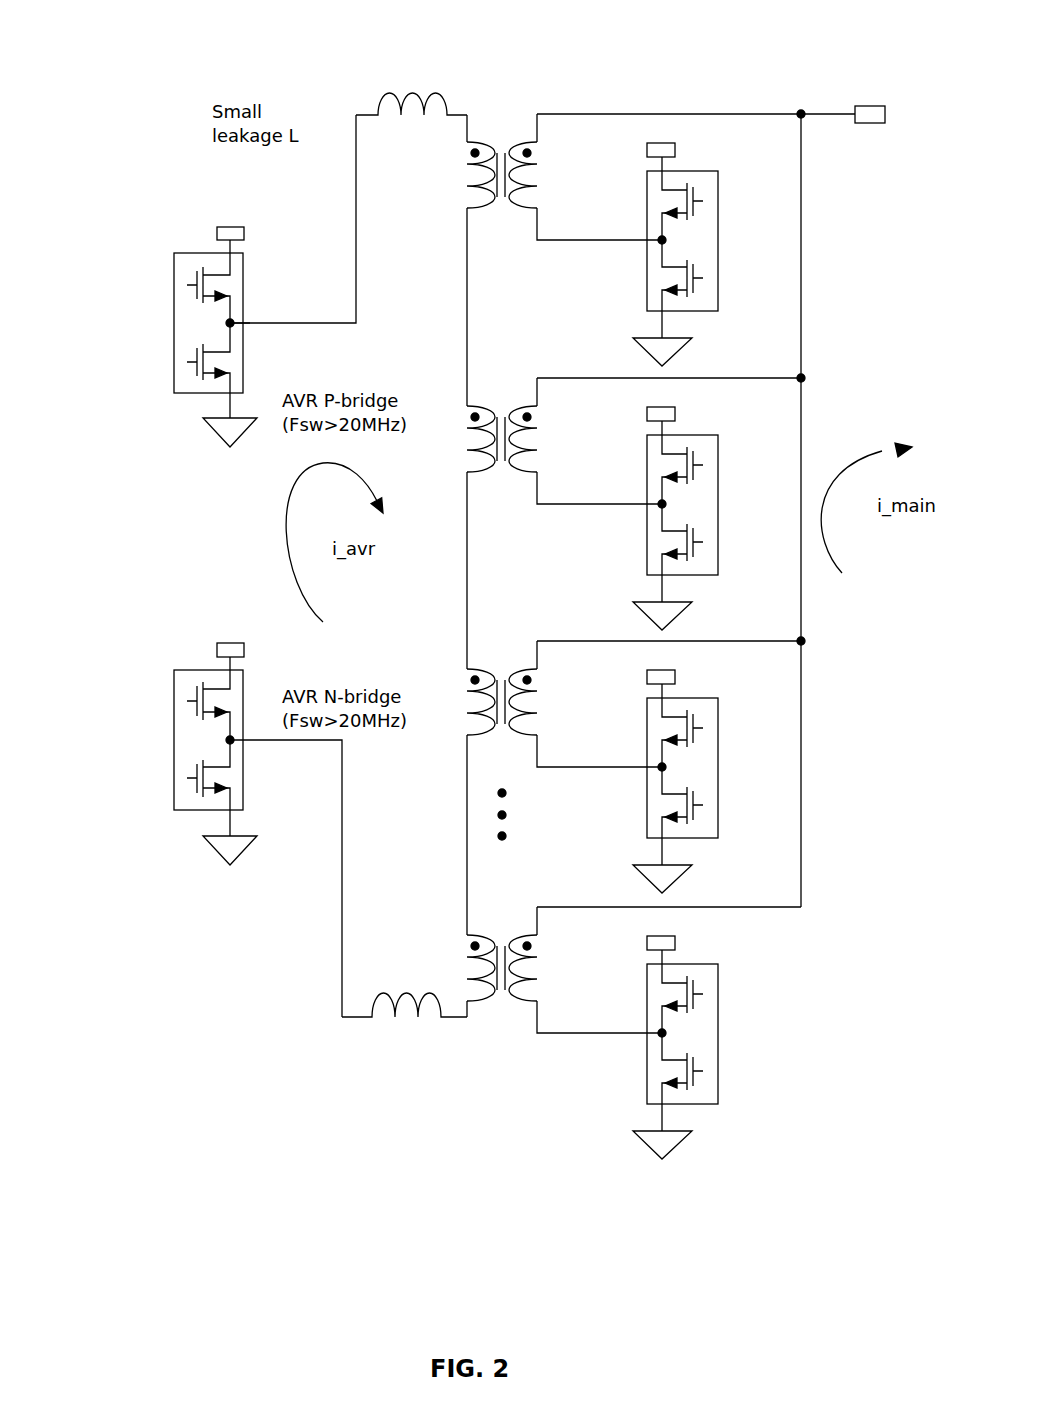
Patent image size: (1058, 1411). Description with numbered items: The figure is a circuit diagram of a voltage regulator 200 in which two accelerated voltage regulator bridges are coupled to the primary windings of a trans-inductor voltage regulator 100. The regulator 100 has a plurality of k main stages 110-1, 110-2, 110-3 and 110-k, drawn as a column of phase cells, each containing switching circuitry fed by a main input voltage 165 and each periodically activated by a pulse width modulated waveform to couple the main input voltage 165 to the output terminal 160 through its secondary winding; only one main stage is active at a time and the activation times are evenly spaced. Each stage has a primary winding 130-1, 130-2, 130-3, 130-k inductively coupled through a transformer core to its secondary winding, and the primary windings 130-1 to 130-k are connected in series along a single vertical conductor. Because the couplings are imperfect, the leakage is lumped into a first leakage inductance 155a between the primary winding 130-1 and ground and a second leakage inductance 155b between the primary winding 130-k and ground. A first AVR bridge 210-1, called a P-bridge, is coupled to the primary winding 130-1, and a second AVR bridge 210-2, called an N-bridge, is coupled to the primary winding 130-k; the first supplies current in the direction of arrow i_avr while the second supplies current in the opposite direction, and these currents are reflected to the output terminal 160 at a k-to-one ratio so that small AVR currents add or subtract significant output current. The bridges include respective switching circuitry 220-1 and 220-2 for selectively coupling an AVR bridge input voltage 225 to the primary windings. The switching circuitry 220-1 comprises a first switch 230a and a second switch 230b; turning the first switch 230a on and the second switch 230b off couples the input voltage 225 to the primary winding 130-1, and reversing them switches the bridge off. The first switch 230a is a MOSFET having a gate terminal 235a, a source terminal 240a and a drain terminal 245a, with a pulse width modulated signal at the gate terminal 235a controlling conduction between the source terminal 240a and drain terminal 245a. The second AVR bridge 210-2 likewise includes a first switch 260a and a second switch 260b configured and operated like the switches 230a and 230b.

The trans-inductor voltage regulator 100 is at (624, 1159).
The voltage regulator 200 is at (482, 1250).
The first main stage 110-1 is at (840, 253).
The second main stage 110-2 is at (842, 421).
The third main stage 110-3 is at (842, 782).
The k-th main stage 110-k is at (842, 1047).
The first primary winding 130-1 is at (463, 182).
The second primary winding 130-2 is at (470, 452).
The third primary winding 130-3 is at (463, 722).
The k-th primary winding 130-k is at (463, 940).
The first leakage inductance 155a is at (388, 78).
The second leakage inductance 155b is at (397, 1033).
The output terminal 160 is at (885, 103).
The main input voltage 165 is at (665, 142).
The first AVR bridge 210-1 is at (150, 323).
The second AVR bridge 210-2 is at (145, 757).
The switching circuitry of first AVR bridge 220-1 is at (173, 308).
The switching circuitry of second AVR bridge 220-2 is at (173, 727).
The AVR bridge input voltage 225 is at (215, 225).
The first switch 230a is at (215, 265).
The second switch 230b is at (184, 383).
The gate terminal 235a is at (190, 287).
The source terminal 240a is at (210, 310).
The drain terminal 245a is at (146, 261).
The first switch of second AVR bridge 260a is at (184, 683).
The second switch of second AVR bridge 260b is at (184, 801).